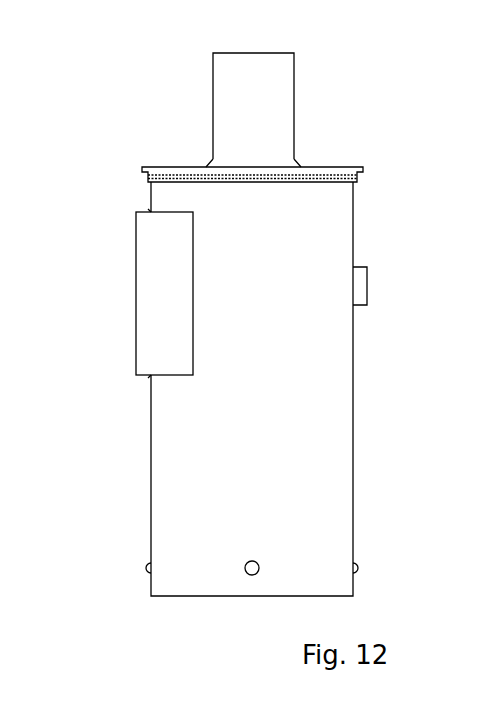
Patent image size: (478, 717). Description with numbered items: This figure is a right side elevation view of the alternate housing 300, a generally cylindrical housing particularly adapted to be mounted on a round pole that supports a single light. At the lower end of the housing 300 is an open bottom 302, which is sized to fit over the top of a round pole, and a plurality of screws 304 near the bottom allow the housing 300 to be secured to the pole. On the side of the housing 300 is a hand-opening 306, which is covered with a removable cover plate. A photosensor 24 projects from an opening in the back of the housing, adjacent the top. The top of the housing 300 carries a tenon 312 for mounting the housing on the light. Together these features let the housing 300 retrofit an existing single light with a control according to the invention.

The alternate housing 300 is at (358, 227).
The open bottom 302 is at (173, 597).
The screws 304 is at (143, 568).
The hand-opening 306 is at (135, 281).
The tenon 312 is at (273, 80).
The photosensor 24 is at (358, 292).